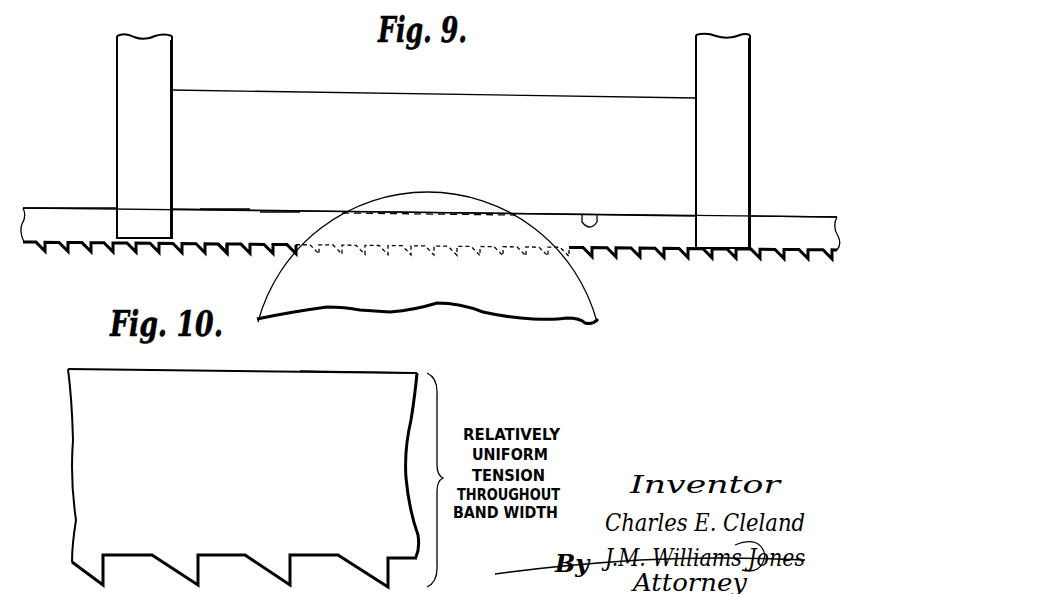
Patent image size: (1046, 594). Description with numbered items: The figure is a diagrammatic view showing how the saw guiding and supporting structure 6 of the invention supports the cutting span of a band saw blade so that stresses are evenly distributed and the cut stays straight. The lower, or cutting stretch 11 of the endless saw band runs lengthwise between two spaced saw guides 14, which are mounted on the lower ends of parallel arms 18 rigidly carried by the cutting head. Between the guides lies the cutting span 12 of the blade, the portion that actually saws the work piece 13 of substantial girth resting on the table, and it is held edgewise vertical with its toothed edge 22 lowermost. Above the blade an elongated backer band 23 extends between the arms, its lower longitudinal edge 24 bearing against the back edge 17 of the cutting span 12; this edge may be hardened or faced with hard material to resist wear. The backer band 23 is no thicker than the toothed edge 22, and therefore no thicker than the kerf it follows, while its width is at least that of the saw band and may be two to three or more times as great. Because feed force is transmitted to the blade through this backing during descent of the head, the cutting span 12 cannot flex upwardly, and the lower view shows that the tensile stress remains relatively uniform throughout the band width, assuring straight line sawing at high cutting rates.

In FIG. 9, the saw guiding and supporting structure 6 is at (584, 69).
In FIG. 9, the cutting stretch 11 is at (72, 190).
In FIG. 9, the cutting span 12 is at (273, 220).
In FIG. 10, the cutting span 12 is at (222, 390).
In FIG. 9, the work piece 13 is at (440, 200).
In FIG. 9, the saw guides 14 is at (106, 198).
In FIG. 9, the back edge 17 is at (222, 210).
In FIG. 10, the back edge 17 is at (332, 370).
In FIG. 9, the arms 18 is at (163, 61).
In FIG. 9, the toothed edge 22 is at (228, 250).
In FIG. 10, the toothed edge 22 is at (267, 565).
In FIG. 9, the backer band 23 is at (442, 107).
In FIG. 9, the longitudinal edge 24 is at (599, 214).